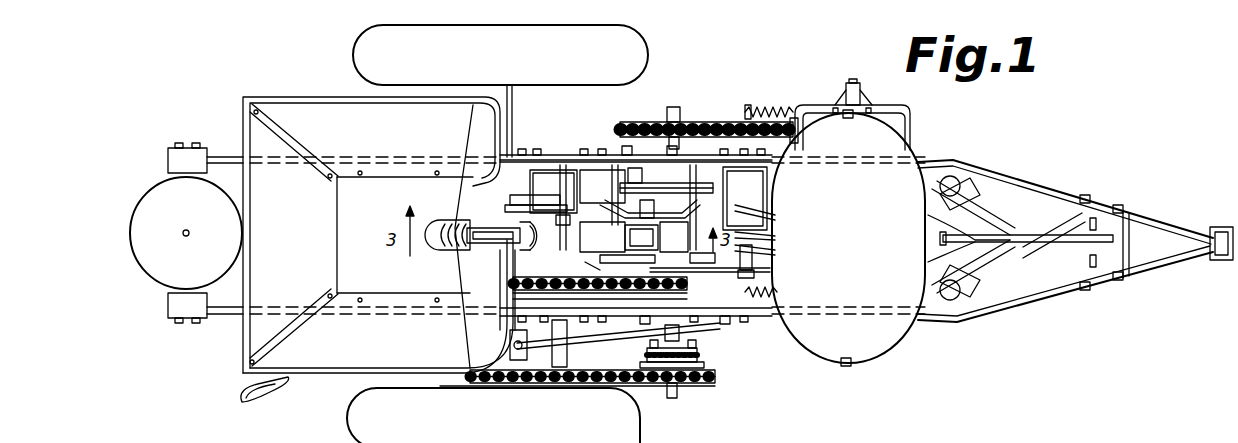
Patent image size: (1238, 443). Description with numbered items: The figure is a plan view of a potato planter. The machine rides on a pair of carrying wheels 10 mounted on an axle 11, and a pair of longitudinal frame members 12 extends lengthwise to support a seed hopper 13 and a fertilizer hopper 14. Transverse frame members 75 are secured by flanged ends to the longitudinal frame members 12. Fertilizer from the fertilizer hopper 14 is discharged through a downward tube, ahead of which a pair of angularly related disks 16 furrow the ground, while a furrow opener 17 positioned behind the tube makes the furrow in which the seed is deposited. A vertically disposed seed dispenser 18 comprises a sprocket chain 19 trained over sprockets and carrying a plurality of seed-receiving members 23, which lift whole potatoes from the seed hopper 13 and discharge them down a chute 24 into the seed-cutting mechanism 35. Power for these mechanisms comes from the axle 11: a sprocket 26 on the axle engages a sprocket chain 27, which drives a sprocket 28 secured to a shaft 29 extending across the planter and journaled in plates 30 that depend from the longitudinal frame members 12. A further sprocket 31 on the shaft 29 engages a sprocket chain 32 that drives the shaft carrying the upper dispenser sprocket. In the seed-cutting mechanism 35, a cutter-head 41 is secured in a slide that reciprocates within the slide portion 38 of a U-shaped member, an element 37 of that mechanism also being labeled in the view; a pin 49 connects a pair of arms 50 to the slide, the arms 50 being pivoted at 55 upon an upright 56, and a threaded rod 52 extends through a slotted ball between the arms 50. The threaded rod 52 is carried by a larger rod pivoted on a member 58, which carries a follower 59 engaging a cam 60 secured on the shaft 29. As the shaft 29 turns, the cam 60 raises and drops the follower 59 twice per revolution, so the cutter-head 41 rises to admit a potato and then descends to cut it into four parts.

The carrying wheels 10 is at (646, 58).
The axle 11 is at (512, 108).
The longitudinal frame members 12 is at (1030, 183).
The seed hopper 13 is at (286, 108).
The fertilizer hopper 14 is at (890, 153).
The angularly related disks 16 is at (990, 218).
The furrow opener 17 is at (765, 269).
The seed dispenser 18 is at (512, 200).
The sprocket chain 19 is at (494, 248).
The seed-receiving members 23 is at (438, 250).
The chute 24 is at (587, 227).
The sprocket 26 is at (515, 352).
The sprocket chain 27 is at (590, 380).
The sprocket 28 is at (712, 378).
The shaft 29 is at (674, 110).
The plates 30 is at (608, 155).
The sprocket 31 is at (687, 283).
The sprocket chain 32 is at (612, 298).
The seed-cutting mechanism 35 is at (623, 237).
The shaft 37 is at (639, 195).
The slide portion 38 is at (722, 261).
The cutter-head 41 is at (602, 237).
The pin 49 is at (620, 262).
The arms 50 is at (678, 208).
The threaded rod 52 is at (650, 211).
The pivot 55 is at (760, 236).
The upright 56 is at (768, 216).
The member 58 is at (602, 186).
The follower 59 is at (668, 188).
The cam 60 is at (637, 174).
The transverse frame members 75 is at (575, 183).